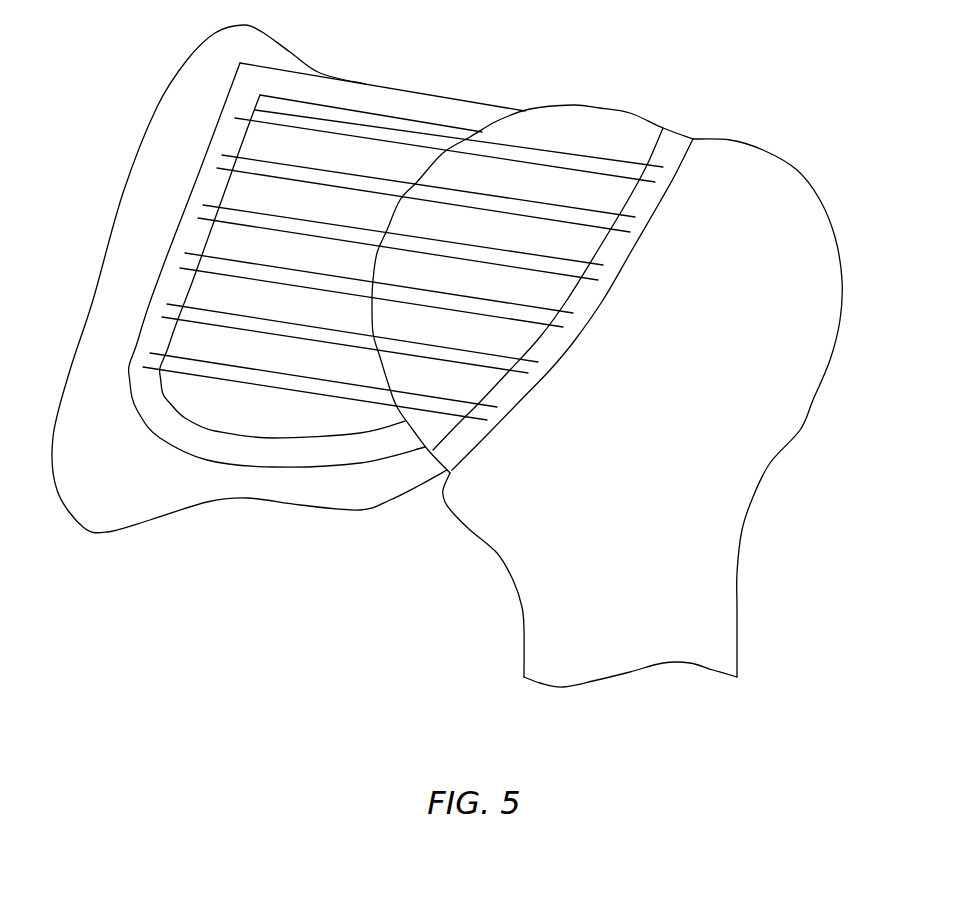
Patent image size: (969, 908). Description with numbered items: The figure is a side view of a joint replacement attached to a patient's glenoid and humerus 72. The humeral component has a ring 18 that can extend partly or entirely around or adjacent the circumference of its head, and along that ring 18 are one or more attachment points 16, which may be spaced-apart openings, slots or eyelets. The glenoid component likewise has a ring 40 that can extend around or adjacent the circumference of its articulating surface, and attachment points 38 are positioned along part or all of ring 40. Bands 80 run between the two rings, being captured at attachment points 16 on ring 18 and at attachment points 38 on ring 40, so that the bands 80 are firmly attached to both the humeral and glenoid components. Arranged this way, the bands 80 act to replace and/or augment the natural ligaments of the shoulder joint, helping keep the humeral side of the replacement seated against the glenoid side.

The attachment points 16 is at (625, 222).
The ring 18 is at (677, 142).
The attachment points 38 is at (247, 110).
The ring 40 is at (200, 237).
The humerus 72 is at (717, 598).
The bands 80 is at (357, 130).